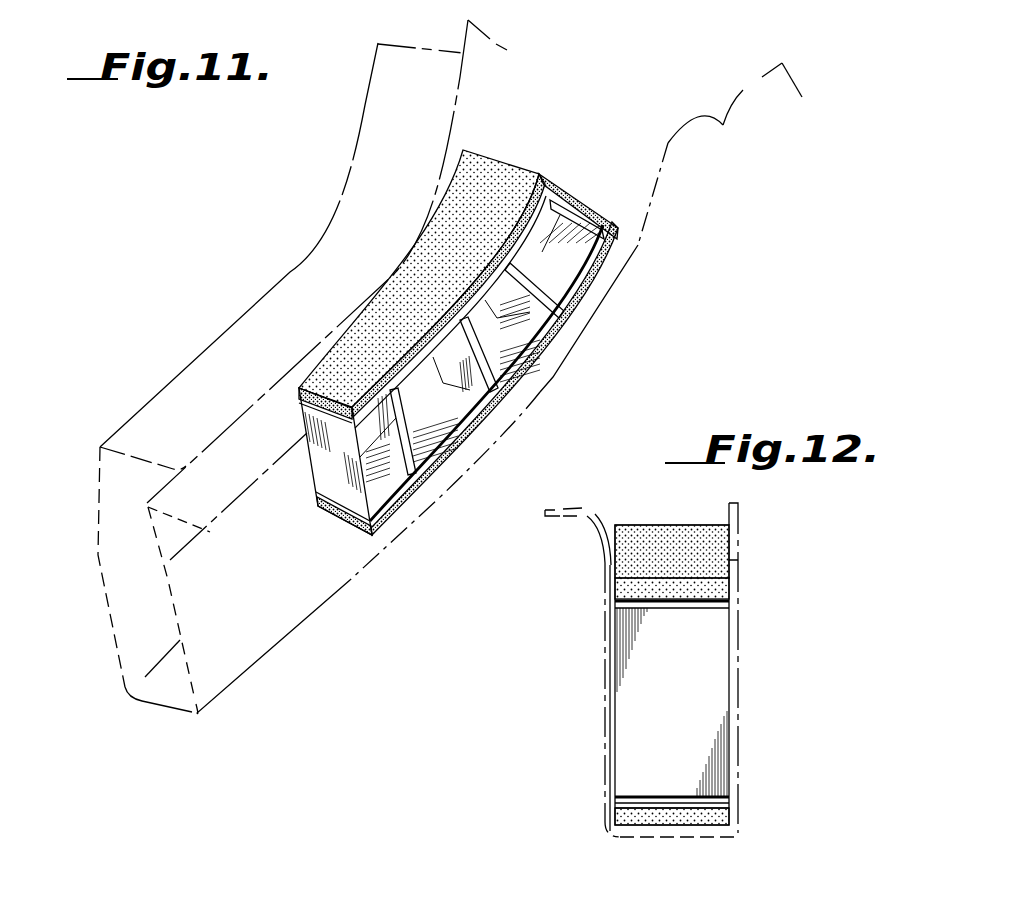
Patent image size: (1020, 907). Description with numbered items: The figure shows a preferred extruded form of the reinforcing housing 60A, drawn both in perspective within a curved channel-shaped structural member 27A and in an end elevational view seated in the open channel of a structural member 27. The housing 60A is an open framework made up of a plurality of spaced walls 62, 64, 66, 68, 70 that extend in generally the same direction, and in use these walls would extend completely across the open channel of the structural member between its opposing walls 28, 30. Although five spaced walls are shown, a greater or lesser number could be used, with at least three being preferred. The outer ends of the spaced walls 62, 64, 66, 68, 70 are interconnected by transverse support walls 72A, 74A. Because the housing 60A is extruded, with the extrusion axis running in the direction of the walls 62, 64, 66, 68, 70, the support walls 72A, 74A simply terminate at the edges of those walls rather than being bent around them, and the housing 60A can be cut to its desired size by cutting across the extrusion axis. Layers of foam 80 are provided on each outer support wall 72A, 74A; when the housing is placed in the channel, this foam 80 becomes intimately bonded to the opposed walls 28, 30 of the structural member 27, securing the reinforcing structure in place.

In FIG. 12, the structural member 27 is at (600, 685).
In FIG. 11, the structural member 27A is at (716, 71).
In FIG. 11, the opposing wall 28 is at (140, 613).
In FIG. 11, the opposing wall 30 is at (248, 632).
In FIG. 11, the housing 60A is at (626, 160).
In FIG. 11, the spaced wall 62 is at (587, 205).
In FIG. 11, the spaced wall 64 is at (528, 312).
In FIG. 11, the spaced wall 66 is at (478, 372).
In FIG. 11, the spaced wall 68 is at (420, 459).
In FIG. 11, the spaced wall 70 is at (338, 448).
In FIG. 12, the spaced wall 70 is at (690, 732).
In FIG. 11, the support wall 72A is at (553, 200).
In FIG. 12, the support wall 72A is at (675, 603).
In FIG. 11, the support wall 74A is at (560, 257).
In FIG. 12, the support wall 74A is at (687, 797).
In FIG. 11, the layers of foam 80 is at (487, 180).
In FIG. 12, the layers of foam 80 is at (648, 545).